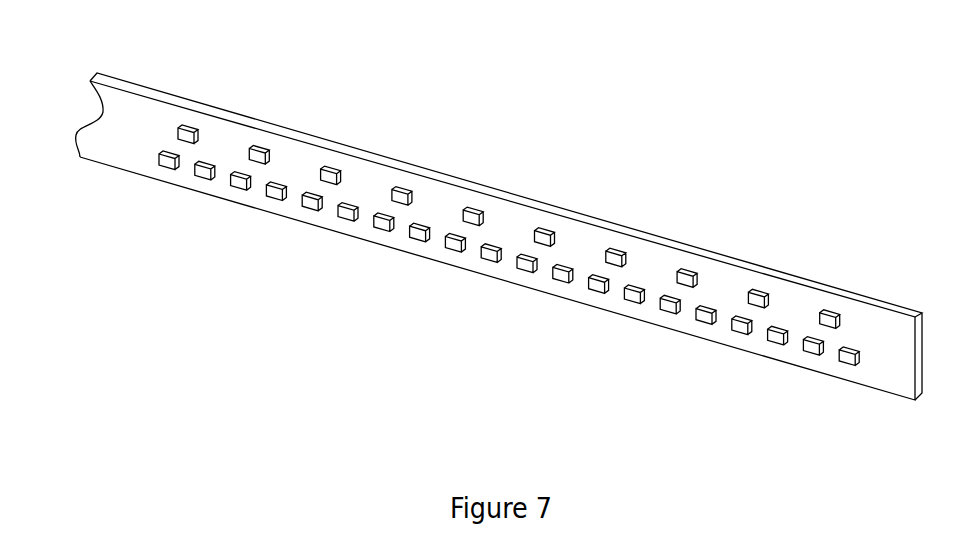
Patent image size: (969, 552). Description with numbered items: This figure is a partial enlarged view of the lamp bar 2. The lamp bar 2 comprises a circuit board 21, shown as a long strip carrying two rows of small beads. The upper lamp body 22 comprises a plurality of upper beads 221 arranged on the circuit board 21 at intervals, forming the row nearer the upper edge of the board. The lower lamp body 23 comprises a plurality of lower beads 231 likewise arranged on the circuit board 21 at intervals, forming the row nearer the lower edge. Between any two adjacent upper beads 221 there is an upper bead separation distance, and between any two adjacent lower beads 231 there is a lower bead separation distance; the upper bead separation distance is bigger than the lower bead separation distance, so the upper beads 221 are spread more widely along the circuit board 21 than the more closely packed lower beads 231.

The lamp bar 2 is at (421, 130).
The circuit board 21 is at (522, 218).
The upper lamp body 22 is at (156, 131).
The upper beads 221 is at (192, 135).
The lower lamp body 23 is at (149, 163).
The lower beads 231 is at (167, 167).